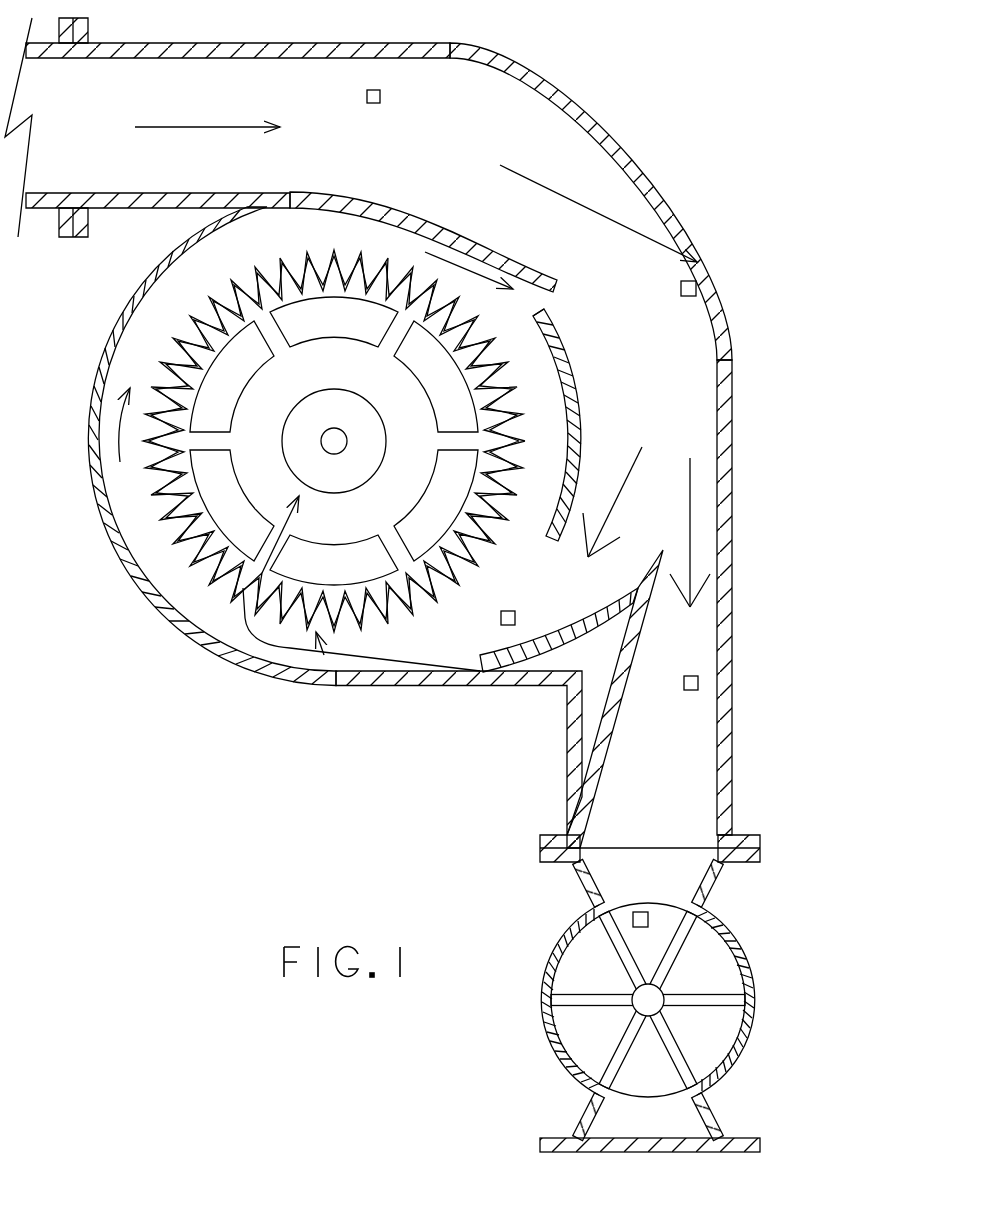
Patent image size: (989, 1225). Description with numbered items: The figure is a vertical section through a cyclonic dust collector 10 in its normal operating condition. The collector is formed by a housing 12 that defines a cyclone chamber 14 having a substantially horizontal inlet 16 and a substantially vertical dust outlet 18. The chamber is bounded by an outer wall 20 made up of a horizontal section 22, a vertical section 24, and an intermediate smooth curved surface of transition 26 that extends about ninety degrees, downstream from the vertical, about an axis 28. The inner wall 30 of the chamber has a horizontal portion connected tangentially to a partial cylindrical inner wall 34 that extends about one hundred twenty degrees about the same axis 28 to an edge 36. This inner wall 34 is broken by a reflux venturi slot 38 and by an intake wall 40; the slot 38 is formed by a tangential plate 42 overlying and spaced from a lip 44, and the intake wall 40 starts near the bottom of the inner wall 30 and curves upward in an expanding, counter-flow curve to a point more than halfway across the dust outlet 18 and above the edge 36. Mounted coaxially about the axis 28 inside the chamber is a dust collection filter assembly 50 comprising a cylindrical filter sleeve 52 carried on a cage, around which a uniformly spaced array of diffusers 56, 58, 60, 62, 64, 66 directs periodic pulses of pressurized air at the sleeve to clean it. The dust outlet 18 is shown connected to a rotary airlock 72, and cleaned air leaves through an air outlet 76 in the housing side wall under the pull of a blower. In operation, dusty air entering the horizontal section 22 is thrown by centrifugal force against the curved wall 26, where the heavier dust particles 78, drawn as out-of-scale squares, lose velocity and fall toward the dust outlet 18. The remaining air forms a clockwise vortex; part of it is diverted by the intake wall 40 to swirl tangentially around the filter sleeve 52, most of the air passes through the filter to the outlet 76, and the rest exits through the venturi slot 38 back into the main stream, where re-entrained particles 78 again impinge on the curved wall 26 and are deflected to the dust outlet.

The cyclonic dust collector 10 is at (635, 126).
The housing 12 is at (215, 690).
The cyclone chamber 14 is at (590, 271).
The horizontal inlet 16 is at (73, 113).
The dust outlet 18 is at (623, 848).
The outer wall 20 is at (714, 370).
The horizontal section 22 is at (197, 43).
The vertical section 24 is at (733, 524).
The curved surface of transition 26 is at (553, 80).
The axis 28 is at (338, 443).
The inner wall 30 is at (90, 490).
The partial cylindrical inner wall 34 is at (100, 375).
The edge 36 is at (555, 545).
The reflux venturi slot 38 is at (543, 302).
The intake wall 40 is at (641, 573).
The tangential plate 42 is at (510, 253).
The lip 44 is at (548, 310).
The dust collection filter assembly 50 is at (322, 633).
The cylindrical filter sleeve 52 is at (420, 600).
The diffuser 56 is at (340, 340).
The diffuser 58 is at (425, 390).
The diffuser 60 is at (430, 500).
The diffuser 62 is at (345, 547).
The diffuser 64 is at (243, 487).
The diffuser 66 is at (250, 378).
The rotary airlock 72 is at (545, 975).
The air outlet 76 is at (283, 422).
The dust particles 78 is at (367, 96).